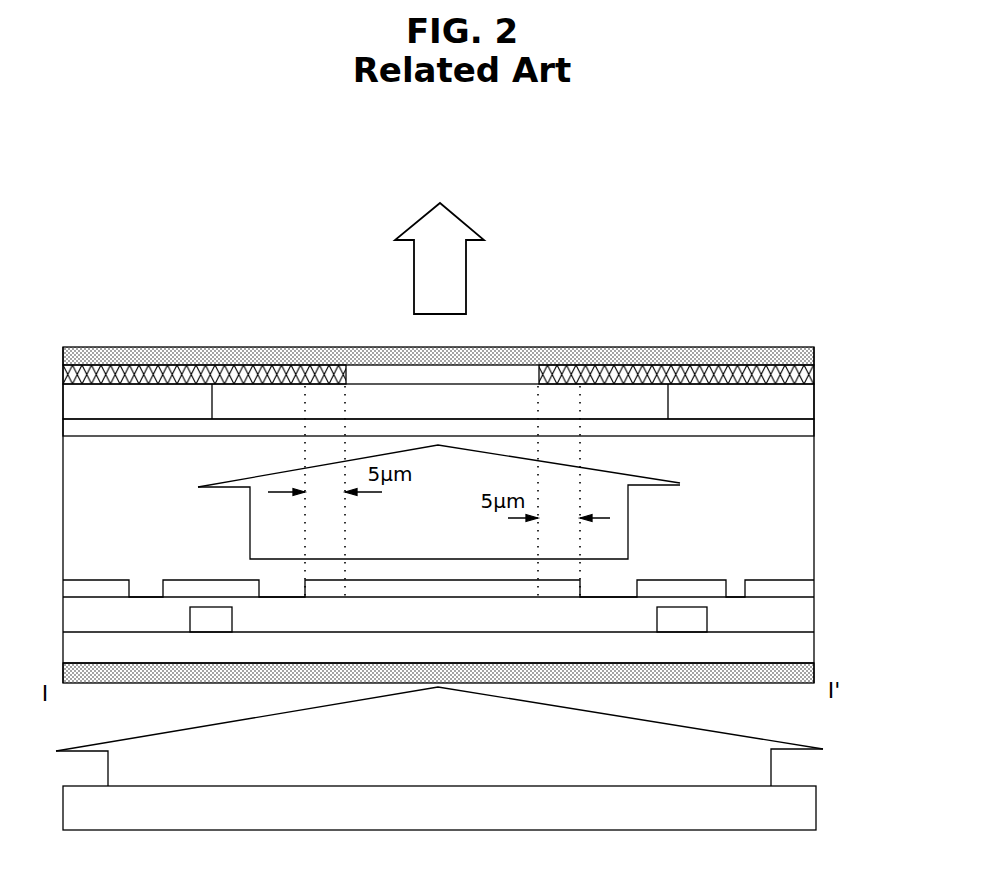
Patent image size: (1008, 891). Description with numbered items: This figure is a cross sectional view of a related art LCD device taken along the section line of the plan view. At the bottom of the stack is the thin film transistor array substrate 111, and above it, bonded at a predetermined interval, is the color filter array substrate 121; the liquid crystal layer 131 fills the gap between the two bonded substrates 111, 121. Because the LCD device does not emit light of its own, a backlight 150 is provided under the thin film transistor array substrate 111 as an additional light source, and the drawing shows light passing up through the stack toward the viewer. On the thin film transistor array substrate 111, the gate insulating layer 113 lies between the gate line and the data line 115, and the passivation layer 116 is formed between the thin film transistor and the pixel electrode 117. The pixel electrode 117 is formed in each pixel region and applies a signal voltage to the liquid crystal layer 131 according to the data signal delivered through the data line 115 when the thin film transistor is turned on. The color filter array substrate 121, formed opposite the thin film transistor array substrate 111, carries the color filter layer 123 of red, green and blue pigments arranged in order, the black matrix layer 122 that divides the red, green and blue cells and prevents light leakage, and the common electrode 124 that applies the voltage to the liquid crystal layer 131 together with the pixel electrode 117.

The thin film transistor array substrate 111 is at (770, 677).
The gate insulating layer 113 is at (807, 648).
The data line 115 is at (682, 618).
The passivation layer 116 is at (807, 613).
The pixel electrode 117 is at (432, 590).
The color filter array substrate 121 is at (767, 352).
The black matrix layer 122 is at (680, 364).
The color filter layer 123 is at (783, 407).
The common electrode 124 is at (703, 423).
The liquid crystal layer 131 is at (802, 508).
The backlight 150 is at (648, 817).